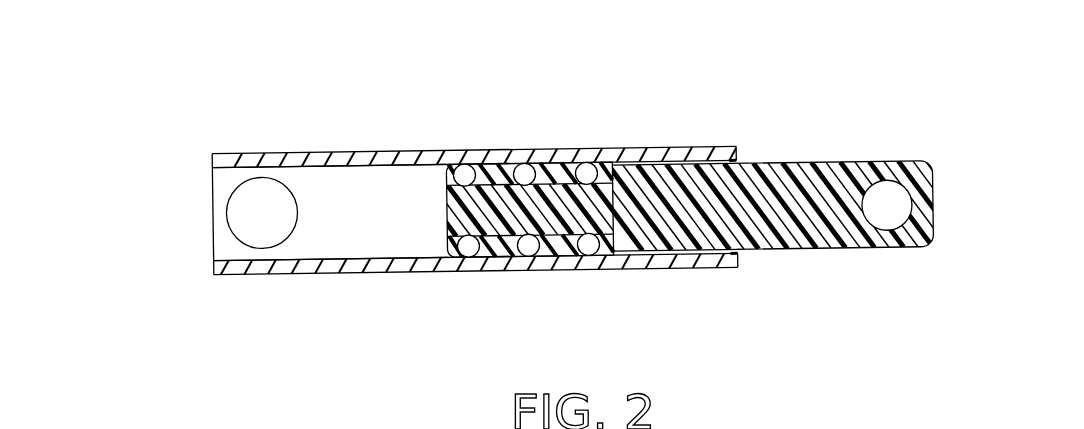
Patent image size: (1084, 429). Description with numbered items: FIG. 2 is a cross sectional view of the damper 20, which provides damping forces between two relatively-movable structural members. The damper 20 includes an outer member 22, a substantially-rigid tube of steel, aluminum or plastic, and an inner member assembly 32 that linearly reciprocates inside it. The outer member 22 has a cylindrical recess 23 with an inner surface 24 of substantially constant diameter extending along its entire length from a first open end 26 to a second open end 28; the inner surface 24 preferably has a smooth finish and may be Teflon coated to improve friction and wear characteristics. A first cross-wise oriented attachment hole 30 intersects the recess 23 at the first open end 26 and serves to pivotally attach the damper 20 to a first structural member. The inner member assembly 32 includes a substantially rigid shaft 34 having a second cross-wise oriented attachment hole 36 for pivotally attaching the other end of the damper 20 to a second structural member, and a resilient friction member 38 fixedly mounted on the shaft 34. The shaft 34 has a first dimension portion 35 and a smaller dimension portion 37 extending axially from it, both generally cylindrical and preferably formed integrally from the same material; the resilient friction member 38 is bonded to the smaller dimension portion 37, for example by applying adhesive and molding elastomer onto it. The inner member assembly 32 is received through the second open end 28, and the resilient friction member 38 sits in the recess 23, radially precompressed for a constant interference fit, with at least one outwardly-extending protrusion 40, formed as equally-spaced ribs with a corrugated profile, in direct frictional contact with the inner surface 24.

The damper 20 is at (667, 128).
The outer member 22 is at (334, 148).
The cylindrical recess 23 is at (377, 233).
The inner surface 24 is at (430, 262).
The first open end 26 is at (209, 158).
The second open end 28 is at (742, 146).
The first cross-wise oriented attachment hole 30 is at (264, 250).
The inner member assembly 32 is at (794, 264).
The shaft 34 is at (841, 167).
The first dimension portion 35 is at (783, 221).
The second cross-wise oriented attachment hole 36 is at (880, 250).
The smaller dimension portion 37 is at (503, 181).
The resilient friction member 38 is at (504, 251).
The outwardly-extending protrusion 40 is at (457, 164).